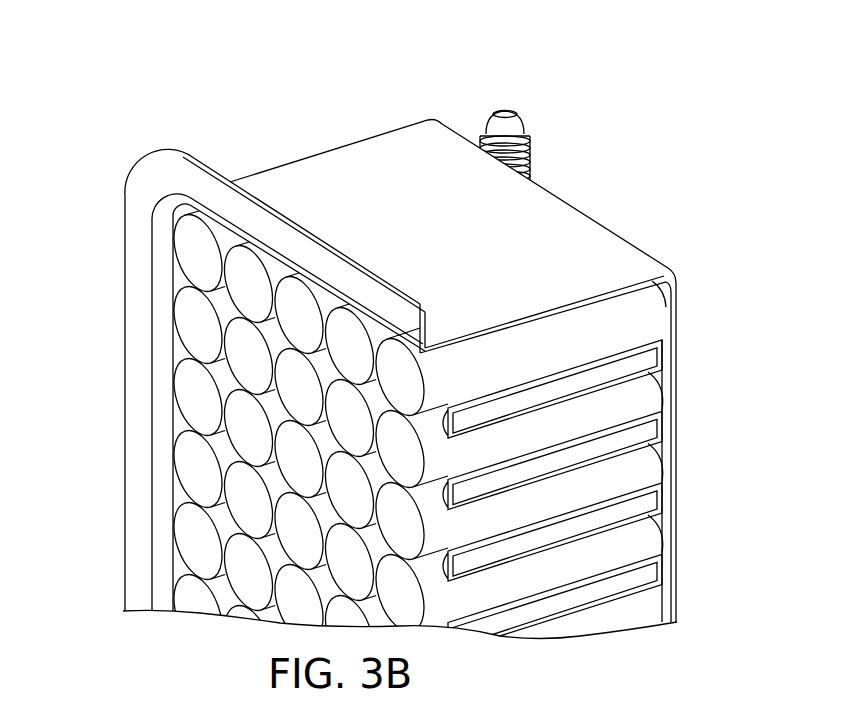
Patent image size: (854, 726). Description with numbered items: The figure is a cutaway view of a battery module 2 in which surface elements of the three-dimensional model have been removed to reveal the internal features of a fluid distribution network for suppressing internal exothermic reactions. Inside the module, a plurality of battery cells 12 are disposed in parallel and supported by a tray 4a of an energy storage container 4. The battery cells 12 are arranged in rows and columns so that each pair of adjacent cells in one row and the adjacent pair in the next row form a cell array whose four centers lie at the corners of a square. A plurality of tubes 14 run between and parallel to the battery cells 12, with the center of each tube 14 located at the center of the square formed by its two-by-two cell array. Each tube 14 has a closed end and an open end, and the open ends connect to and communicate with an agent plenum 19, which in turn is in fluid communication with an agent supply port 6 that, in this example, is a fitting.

The battery module 2 is at (300, 147).
The energy storage container 4 is at (457, 337).
The tray 4a is at (583, 243).
The agent supply port 6 is at (532, 128).
The battery cells 12 is at (177, 394).
The tubes 14 is at (633, 380).
The agent plenum 19 is at (672, 455).